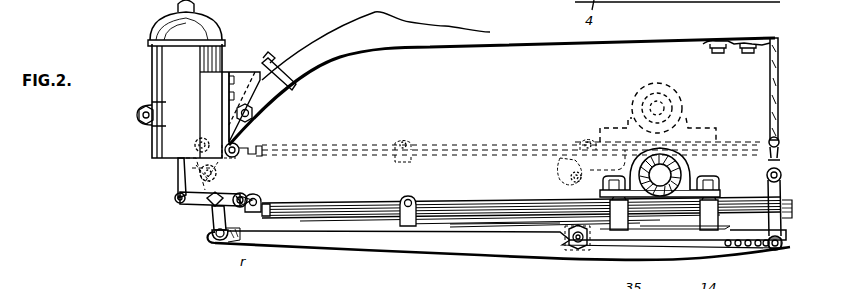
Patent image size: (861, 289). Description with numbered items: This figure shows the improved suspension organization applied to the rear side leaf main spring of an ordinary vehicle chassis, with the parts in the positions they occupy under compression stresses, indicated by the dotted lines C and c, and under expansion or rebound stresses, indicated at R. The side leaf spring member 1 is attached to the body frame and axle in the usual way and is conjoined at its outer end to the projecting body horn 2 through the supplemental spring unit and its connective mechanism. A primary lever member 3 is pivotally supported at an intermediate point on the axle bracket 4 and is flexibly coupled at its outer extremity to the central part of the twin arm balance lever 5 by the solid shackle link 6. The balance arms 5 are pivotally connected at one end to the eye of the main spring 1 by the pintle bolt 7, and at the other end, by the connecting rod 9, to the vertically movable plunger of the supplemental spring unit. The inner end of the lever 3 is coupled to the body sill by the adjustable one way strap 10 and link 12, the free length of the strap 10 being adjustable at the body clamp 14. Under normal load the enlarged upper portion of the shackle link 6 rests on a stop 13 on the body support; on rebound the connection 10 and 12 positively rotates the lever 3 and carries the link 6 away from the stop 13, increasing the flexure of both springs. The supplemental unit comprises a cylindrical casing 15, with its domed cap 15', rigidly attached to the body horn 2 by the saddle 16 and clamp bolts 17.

The side leaf spring member 1 is at (488, 210).
The body horn 2 is at (343, 55).
The primary lever member 3 is at (476, 248).
The axle bracket 4 is at (560, 246).
The twin arm balance lever 5 is at (195, 207).
The solid shackle link 6 is at (213, 220).
The pintle bolt 7 is at (250, 201).
The connecting rod 9 is at (176, 177).
The adjustable one way strap 10 is at (768, 97).
The link connection 12 is at (768, 188).
The stop 13 is at (242, 158).
The body clamp 14 is at (737, 50).
The cylindrical casing 15 is at (171, 99).
The cylinder dome cap 15' is at (172, 20).
The saddle 16 is at (240, 72).
The clamp bolts 17 is at (264, 113).
The rebound position R is at (505, 205).
The compression position C is at (659, 134).
The compression position c is at (225, 160).